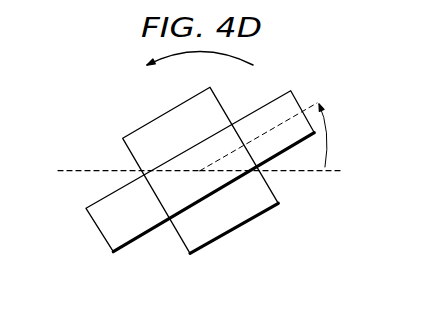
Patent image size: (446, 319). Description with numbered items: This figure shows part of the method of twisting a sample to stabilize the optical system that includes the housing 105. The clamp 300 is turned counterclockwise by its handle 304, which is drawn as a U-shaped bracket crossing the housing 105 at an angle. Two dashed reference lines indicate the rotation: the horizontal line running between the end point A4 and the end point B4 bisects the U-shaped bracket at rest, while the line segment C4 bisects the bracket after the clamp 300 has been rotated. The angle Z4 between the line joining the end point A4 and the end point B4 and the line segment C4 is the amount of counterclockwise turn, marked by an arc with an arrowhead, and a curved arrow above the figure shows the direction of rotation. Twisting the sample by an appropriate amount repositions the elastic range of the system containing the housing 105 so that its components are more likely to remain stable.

The housing 105 is at (292, 90).
The clamp 300 is at (190, 241).
The handle 304 is at (235, 221).
The line segment end point A4 is at (117, 171).
The line segment end point B4 is at (284, 171).
The line segment C4 is at (274, 130).
The angle Z4 is at (334, 135).